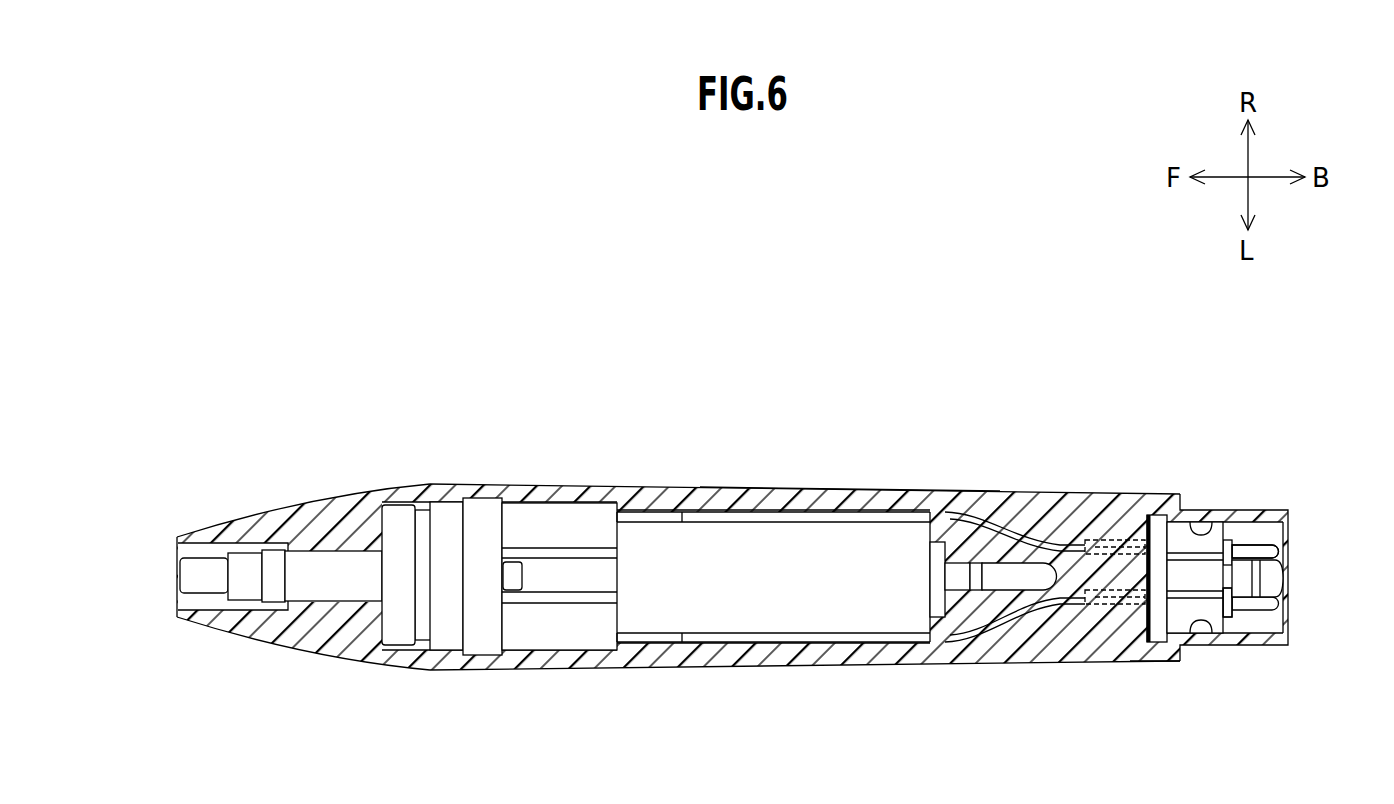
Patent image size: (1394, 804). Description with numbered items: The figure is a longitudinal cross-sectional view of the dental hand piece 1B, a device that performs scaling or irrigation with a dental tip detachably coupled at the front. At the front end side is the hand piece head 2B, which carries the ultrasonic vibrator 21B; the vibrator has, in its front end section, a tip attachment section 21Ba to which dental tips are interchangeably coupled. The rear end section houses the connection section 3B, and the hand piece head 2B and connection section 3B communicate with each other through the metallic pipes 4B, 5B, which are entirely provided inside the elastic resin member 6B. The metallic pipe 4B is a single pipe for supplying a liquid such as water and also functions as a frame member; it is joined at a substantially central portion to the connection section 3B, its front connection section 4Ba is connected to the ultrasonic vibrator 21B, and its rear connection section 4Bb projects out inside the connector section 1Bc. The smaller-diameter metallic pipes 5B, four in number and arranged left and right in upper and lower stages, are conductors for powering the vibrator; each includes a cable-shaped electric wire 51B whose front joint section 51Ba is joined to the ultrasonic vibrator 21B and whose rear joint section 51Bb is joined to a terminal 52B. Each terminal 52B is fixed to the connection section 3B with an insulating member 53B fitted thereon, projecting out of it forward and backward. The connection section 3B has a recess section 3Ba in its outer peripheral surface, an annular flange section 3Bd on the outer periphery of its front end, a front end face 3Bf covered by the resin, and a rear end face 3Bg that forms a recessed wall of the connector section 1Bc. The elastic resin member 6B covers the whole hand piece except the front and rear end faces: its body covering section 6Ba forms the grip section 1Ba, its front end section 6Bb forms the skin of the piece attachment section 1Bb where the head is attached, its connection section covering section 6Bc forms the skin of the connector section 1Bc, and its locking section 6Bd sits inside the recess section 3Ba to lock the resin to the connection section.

The dental hand piece 1B is at (752, 272).
The grip section 1Ba is at (845, 488).
The piece attachment section 1Bb is at (234, 509).
The connector section 1Bc is at (1275, 508).
The hand piece head 2B is at (482, 672).
The elastic resin member 6B is at (908, 490).
The body covering section 6Ba is at (936, 508).
The front end section 6Bb is at (306, 505).
The connection section covering section 6Bc is at (1210, 510).
The locking section 6Bd is at (1243, 545).
The ultrasonic vibrator 21B is at (555, 522).
The tip attachment section 21Ba is at (211, 593).
The electric wire 51B is at (765, 635).
The front joint section 51Ba is at (625, 515).
The rear joint section 51Bb is at (1087, 600).
The metallic pipe 4B is at (1028, 577).
The front connection section 4Ba is at (952, 575).
The rear connection section 4Bb is at (1277, 578).
The metallic pipes 5B is at (997, 530).
The terminal 52B is at (1115, 540).
The insulating member 53B is at (1240, 565).
The connection section 3B is at (1183, 615).
The recess section 3Ba is at (1202, 627).
The annular flange section 3Bd is at (1157, 523).
The front end face 3Bf is at (1140, 663).
The rear end face 3Bg is at (1227, 620).